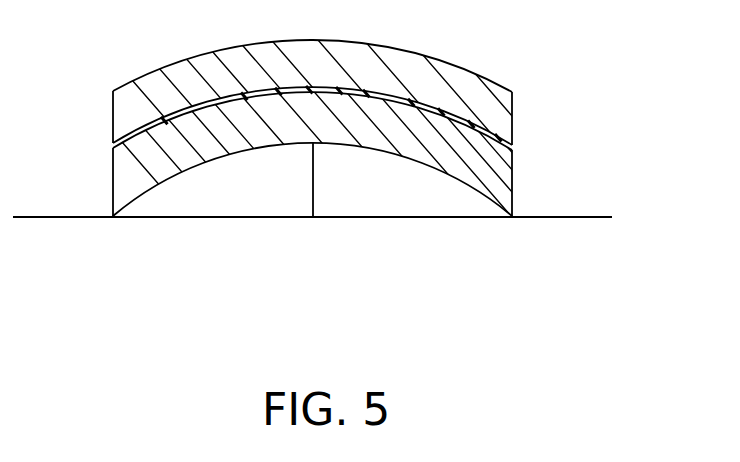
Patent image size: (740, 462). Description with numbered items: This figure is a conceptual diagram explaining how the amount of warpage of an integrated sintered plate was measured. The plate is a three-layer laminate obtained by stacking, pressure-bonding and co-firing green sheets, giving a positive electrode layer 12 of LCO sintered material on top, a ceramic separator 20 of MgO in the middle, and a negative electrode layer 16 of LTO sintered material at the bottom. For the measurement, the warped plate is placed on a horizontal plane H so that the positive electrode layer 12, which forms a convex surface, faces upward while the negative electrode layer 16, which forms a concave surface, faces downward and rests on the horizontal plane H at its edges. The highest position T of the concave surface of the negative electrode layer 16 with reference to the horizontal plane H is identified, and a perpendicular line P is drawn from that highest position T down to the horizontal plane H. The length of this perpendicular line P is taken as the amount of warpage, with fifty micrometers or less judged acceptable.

The positive electrode layer 12 is at (502, 107).
The ceramic separator 20 is at (502, 141).
The negative electrode layer 16 is at (497, 180).
The perpendicular line P is at (305, 180).
The highest position T is at (313, 148).
The horizontal plane H is at (592, 218).